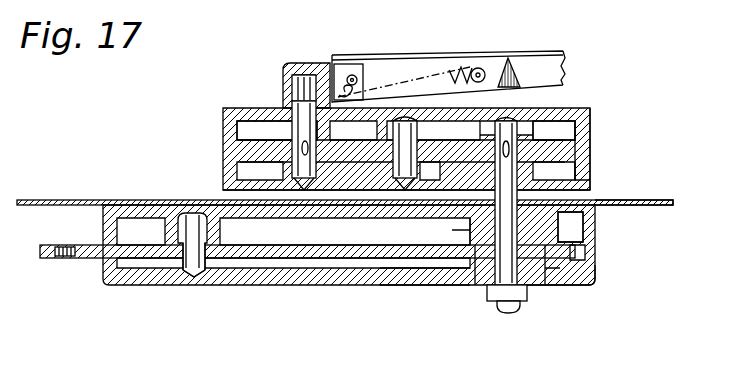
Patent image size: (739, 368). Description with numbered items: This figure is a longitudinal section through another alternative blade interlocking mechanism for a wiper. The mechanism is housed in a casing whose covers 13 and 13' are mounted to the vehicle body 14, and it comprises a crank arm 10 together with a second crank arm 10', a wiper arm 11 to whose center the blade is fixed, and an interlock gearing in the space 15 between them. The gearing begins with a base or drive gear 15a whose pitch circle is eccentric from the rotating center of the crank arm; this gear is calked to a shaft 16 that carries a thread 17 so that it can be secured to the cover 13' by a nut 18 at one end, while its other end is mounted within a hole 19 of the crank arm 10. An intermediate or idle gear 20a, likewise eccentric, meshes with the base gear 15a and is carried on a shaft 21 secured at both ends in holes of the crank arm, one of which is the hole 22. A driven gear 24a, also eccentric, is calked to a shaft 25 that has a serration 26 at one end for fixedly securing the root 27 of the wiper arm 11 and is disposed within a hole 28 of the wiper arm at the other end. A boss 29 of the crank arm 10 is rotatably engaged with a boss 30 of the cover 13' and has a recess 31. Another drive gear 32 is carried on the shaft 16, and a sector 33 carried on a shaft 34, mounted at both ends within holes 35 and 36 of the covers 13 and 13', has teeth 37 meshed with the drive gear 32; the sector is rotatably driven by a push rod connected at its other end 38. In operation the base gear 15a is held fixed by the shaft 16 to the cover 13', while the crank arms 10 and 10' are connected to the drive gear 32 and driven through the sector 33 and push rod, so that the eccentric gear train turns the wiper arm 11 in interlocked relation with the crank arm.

The crank arm 10 is at (433, 139).
The crank arm 10' is at (607, 162).
The wiper arm 11 is at (553, 55).
The cover 13 is at (375, 245).
The cover 13' is at (606, 282).
The vehicle body 14 is at (673, 201).
The housing cavity 15 is at (548, 133).
The base or drive gear 15a is at (580, 117).
The shaft 16 is at (480, 286).
The thread 17 is at (510, 310).
The nut 18 is at (489, 298).
The hole 19 is at (512, 120).
The intermediate or idle gear 20a is at (517, 113).
The shaft 21 is at (445, 105).
The hole 22 is at (400, 117).
The driven gear 24a is at (262, 130).
The shaft 25 is at (300, 122).
The serration 26 is at (310, 90).
The root 27 is at (287, 68).
The hole 28 is at (317, 191).
The boss 29 is at (594, 203).
The boss 30 is at (593, 227).
The recess 31 is at (452, 230).
The drive gear 32 is at (550, 286).
The sector 33 is at (291, 259).
The shaft 34 is at (174, 262).
The hole 35 is at (195, 213).
The hole 36 is at (187, 273).
The teeth 37 is at (410, 286).
The other end 38 is at (67, 259).